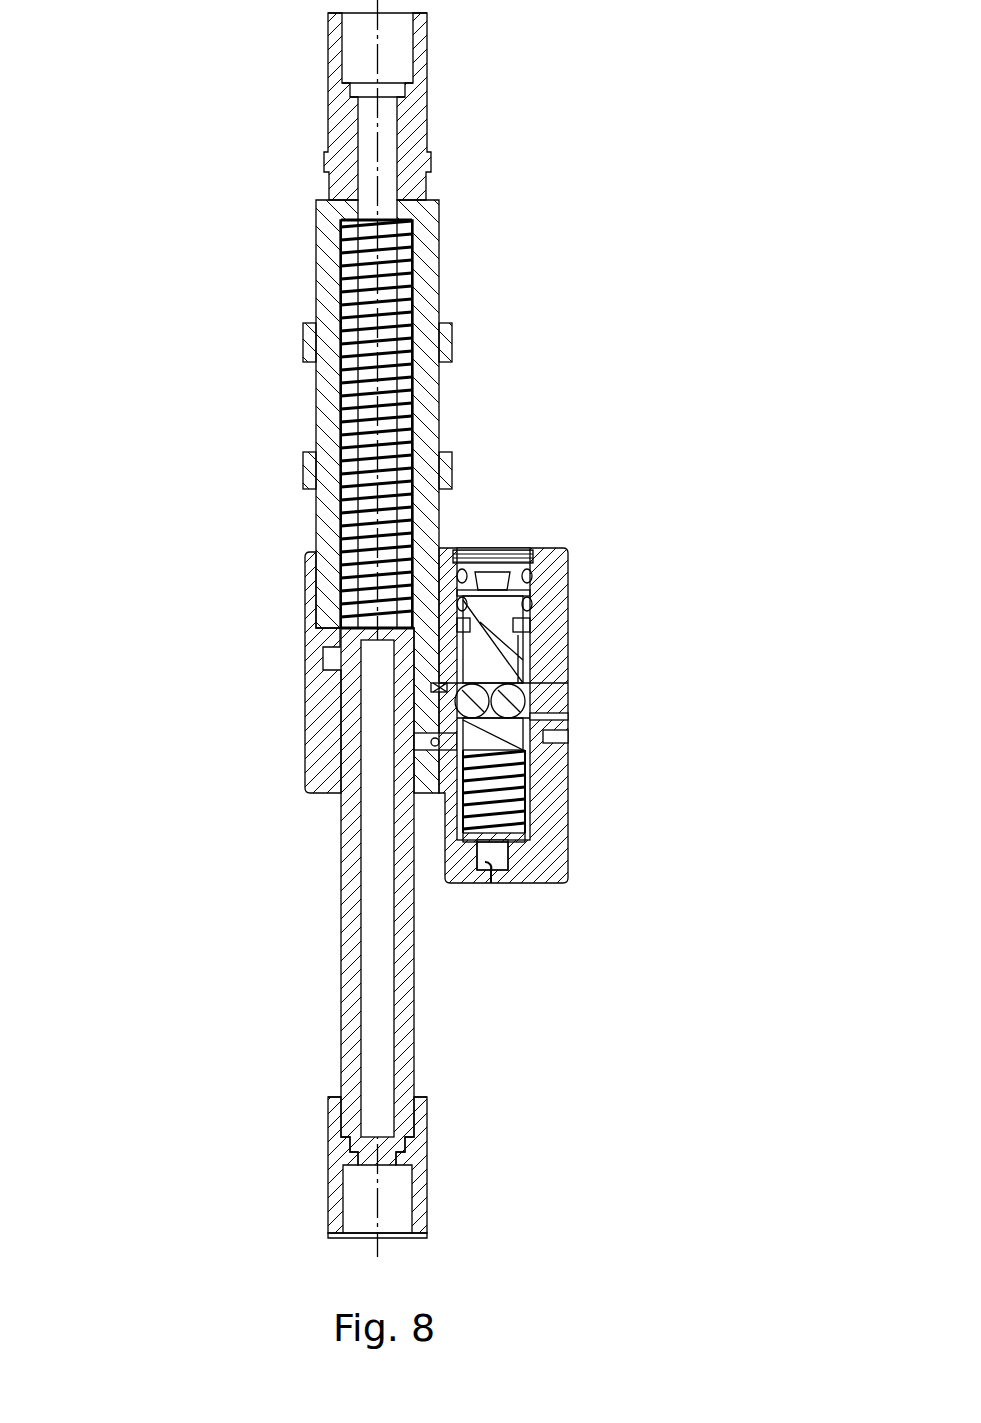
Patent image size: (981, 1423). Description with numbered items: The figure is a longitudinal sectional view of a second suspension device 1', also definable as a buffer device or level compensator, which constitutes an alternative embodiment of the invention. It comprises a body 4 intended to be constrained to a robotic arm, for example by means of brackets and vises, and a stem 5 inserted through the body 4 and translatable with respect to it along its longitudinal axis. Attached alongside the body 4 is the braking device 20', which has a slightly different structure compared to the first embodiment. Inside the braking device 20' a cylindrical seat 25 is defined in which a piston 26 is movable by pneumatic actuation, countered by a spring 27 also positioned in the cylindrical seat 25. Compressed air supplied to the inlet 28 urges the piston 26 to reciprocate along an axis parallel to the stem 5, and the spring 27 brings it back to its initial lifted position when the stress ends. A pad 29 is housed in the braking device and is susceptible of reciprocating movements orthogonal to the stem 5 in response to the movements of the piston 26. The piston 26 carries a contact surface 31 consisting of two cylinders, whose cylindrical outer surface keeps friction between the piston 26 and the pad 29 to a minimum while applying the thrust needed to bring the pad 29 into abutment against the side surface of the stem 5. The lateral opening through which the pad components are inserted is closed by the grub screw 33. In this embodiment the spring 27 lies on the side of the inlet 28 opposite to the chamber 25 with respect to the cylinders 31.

The suspension device 1' is at (425, 628).
The body 4 is at (428, 268).
The stem 5 is at (338, 937).
The braking device 20' is at (612, 673).
The cylindrical seat 25 is at (523, 790).
The piston 26 is at (503, 657).
The spring 27 is at (525, 810).
The inlet 28 is at (485, 582).
The pad 29 is at (427, 733).
The contact surface 31 is at (528, 694).
The grub screw 33 is at (560, 718).